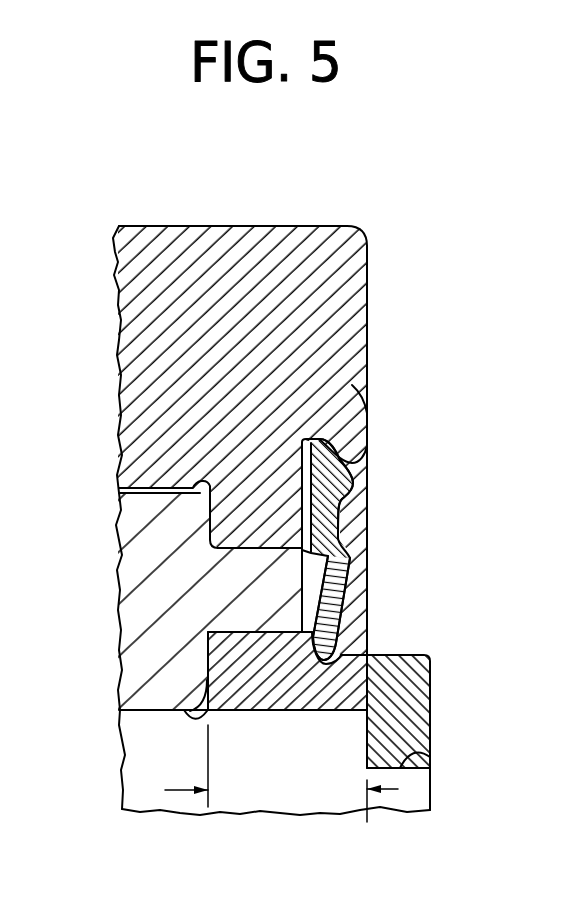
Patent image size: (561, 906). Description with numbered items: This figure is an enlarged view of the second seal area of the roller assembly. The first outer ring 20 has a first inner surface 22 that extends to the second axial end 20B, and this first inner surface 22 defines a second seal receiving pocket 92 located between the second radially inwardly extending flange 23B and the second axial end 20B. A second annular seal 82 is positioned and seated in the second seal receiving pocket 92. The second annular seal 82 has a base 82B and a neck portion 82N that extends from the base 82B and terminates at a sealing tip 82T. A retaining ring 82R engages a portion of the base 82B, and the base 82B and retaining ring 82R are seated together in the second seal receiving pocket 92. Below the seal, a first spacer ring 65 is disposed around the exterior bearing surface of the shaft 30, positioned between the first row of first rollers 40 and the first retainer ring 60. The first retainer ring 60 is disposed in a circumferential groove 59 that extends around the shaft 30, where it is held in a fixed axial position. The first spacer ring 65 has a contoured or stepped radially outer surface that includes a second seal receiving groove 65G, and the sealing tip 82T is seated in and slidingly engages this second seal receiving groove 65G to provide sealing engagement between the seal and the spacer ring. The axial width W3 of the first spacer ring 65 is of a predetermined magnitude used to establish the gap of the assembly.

The first outer ring 20 is at (318, 242).
The second axial end 20B is at (367, 293).
The second seal receiving pocket 92 is at (306, 438).
The retaining ring 82R is at (338, 453).
The base 82B is at (353, 482).
The neck portion 82N is at (343, 505).
The second annular seal 82 is at (391, 527).
The sealing tip 82T is at (353, 543).
The second seal receiving groove 65G is at (336, 654).
The first retainer ring 60 is at (412, 710).
The circumferential groove 59 is at (430, 757).
The second radially inwardly extending flange 23B is at (273, 510).
The first inner surface 22 is at (278, 550).
The first rollers 40 is at (140, 611).
The axial width of the first spacer ring W3 is at (180, 793).
The first spacer ring 65 is at (327, 744).
The shaft 30 is at (320, 793).